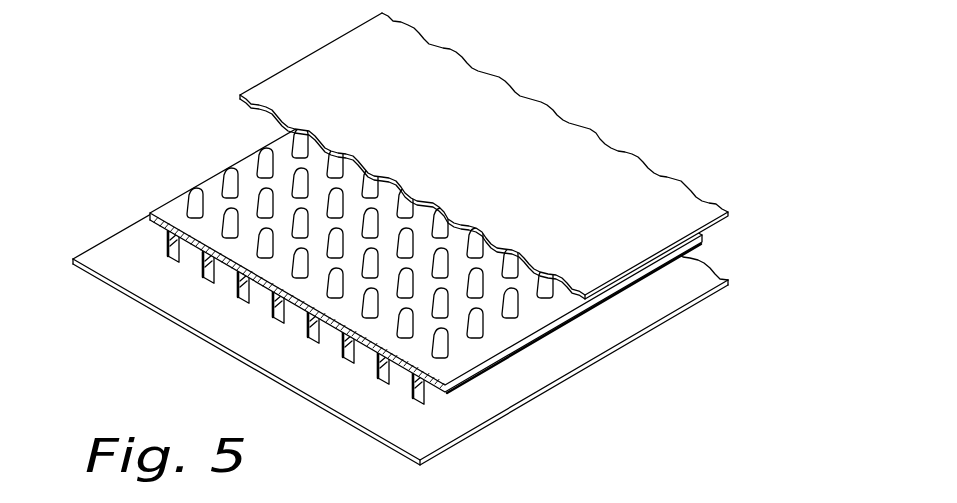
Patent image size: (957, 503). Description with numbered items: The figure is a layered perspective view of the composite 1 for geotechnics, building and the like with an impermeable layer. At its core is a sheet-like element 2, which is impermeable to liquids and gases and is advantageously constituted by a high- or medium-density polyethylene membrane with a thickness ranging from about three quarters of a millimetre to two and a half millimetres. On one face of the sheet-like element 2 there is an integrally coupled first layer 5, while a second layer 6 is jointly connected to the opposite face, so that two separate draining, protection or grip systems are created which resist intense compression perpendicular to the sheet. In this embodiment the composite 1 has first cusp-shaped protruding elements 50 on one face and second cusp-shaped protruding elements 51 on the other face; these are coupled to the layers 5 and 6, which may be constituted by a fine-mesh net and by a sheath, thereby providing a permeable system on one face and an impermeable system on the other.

The composite 1 is at (387, 239).
The sheet-like element 2 is at (410, 229).
The first layer 5 is at (287, 78).
The second layer 6 is at (113, 240).
The first cusp-shaped protruding elements 50 is at (230, 167).
The second cusp-shaped protruding elements 51 is at (240, 293).